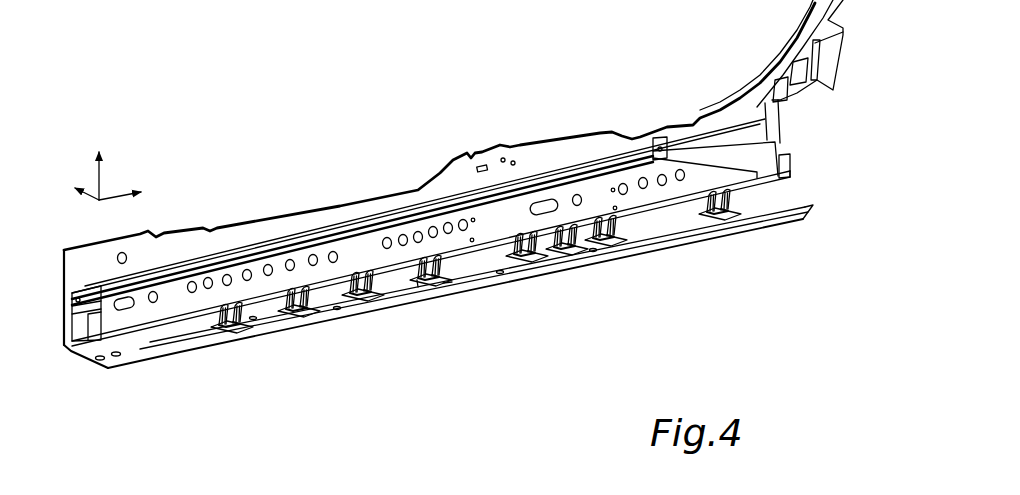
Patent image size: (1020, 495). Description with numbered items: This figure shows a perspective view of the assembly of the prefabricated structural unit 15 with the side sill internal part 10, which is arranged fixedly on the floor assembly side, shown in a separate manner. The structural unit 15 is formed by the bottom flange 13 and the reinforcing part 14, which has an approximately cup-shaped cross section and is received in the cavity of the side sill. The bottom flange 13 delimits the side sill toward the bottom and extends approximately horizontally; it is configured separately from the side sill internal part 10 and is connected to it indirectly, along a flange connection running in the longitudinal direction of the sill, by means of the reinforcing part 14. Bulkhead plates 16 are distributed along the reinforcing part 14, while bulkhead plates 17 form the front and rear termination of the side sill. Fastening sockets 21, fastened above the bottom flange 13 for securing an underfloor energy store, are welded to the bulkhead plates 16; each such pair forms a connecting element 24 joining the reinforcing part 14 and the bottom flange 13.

The side sill internal part 10 is at (549, 80).
The bottom flange 13 is at (298, 326).
The reinforcing part 14 is at (287, 242).
The structural unit 15 is at (569, 313).
The bulkhead plate 16 is at (447, 282).
The bulkhead plate 17 is at (91, 336).
The fastening socket 21 is at (417, 286).
The connecting element 24 is at (236, 341).